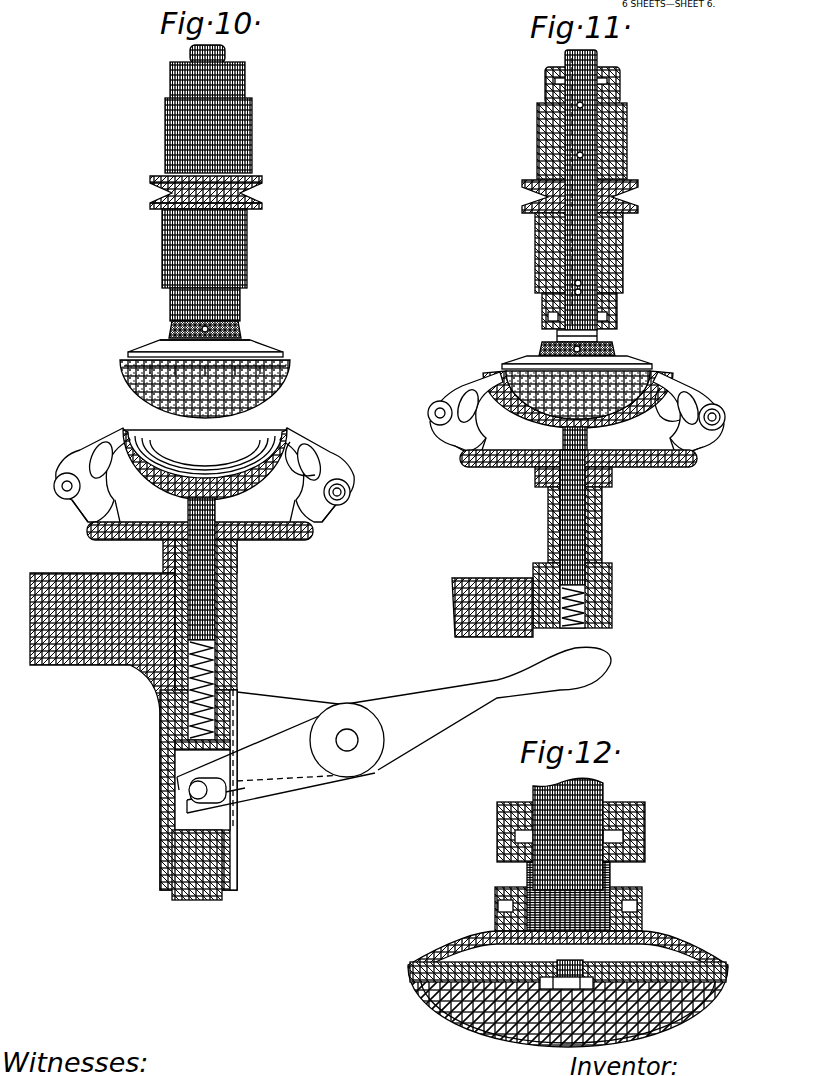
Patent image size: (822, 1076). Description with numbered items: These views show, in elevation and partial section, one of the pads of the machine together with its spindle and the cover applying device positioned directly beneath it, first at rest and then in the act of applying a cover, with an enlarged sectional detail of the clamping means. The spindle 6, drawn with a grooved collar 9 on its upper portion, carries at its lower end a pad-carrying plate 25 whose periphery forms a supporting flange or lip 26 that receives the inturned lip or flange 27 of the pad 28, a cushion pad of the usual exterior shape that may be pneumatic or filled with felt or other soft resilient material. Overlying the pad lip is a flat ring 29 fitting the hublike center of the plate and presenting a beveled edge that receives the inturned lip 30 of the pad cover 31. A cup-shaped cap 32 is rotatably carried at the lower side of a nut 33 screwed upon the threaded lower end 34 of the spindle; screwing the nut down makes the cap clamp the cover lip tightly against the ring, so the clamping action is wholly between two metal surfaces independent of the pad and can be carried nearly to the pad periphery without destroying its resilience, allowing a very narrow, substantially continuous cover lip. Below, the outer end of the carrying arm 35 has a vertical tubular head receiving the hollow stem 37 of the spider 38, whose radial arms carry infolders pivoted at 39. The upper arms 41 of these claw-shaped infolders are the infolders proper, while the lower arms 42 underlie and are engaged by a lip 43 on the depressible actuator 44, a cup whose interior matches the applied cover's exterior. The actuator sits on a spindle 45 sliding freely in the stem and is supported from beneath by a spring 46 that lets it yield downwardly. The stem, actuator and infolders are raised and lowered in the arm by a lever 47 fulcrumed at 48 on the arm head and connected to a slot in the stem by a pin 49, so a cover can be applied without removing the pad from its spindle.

In FIG. 11, the spindle 6 is at (598, 62).
In FIG. 12, the spindle 6 is at (603, 798).
In FIG. 10, the grooved pulley 9 is at (160, 192).
In FIG. 11, the grooved pulley 9 is at (620, 188).
In FIG. 12, the pad-carrying plate 25 is at (472, 1033).
In FIG. 12, the supporting flange or lip 26 is at (437, 1006).
In FIG. 12, the inturned lip or flange 27 is at (412, 978).
In FIG. 12, the pad 28 is at (527, 1040).
In FIG. 12, the flat ring 29 is at (457, 962).
In FIG. 10, the inturned lip 30 is at (286, 366).
In FIG. 11, the inturned lip 30 is at (578, 395).
In FIG. 12, the inturned lip 30 is at (720, 964).
In FIG. 12, the pad cover 31 is at (686, 1028).
In FIG. 10, the cup-shaped cap 32 is at (258, 349).
In FIG. 11, the cup-shaped cap 32 is at (626, 362).
In FIG. 12, the cup-shaped cap 32 is at (660, 943).
In FIG. 10, the nut 33 is at (236, 331).
In FIG. 11, the nut 33 is at (601, 349).
In FIG. 12, the nut 33 is at (627, 892).
In FIG. 12, the threaded lower end 34 is at (527, 865).
In FIG. 10, the carrying arm 35 is at (93, 663).
In FIG. 10, the hollow stem 37 is at (216, 637).
In FIG. 10, the spider 38 is at (193, 547).
In FIG. 11, the spider 38 is at (578, 468).
In FIG. 10, the pivot 39 is at (66, 488).
In FIG. 10, the upper arms 41 is at (83, 457).
In FIG. 11, the upper arms 41 is at (672, 382).
In FIG. 10, the lower arms 42 is at (292, 484).
In FIG. 11, the lower arms 42 is at (576, 420).
In FIG. 10, the lip 43 is at (292, 462).
In FIG. 11, the lip 43 is at (668, 402).
In FIG. 10, the depressible actuator 44 is at (175, 466).
In FIG. 10, the spindle 45 is at (198, 594).
In FIG. 10, the spring 46 is at (229, 665).
In FIG. 10, the lever 47 is at (293, 750).
In FIG. 10, the fulcrum 48 is at (347, 750).
In FIG. 10, the pin 49 is at (191, 792).